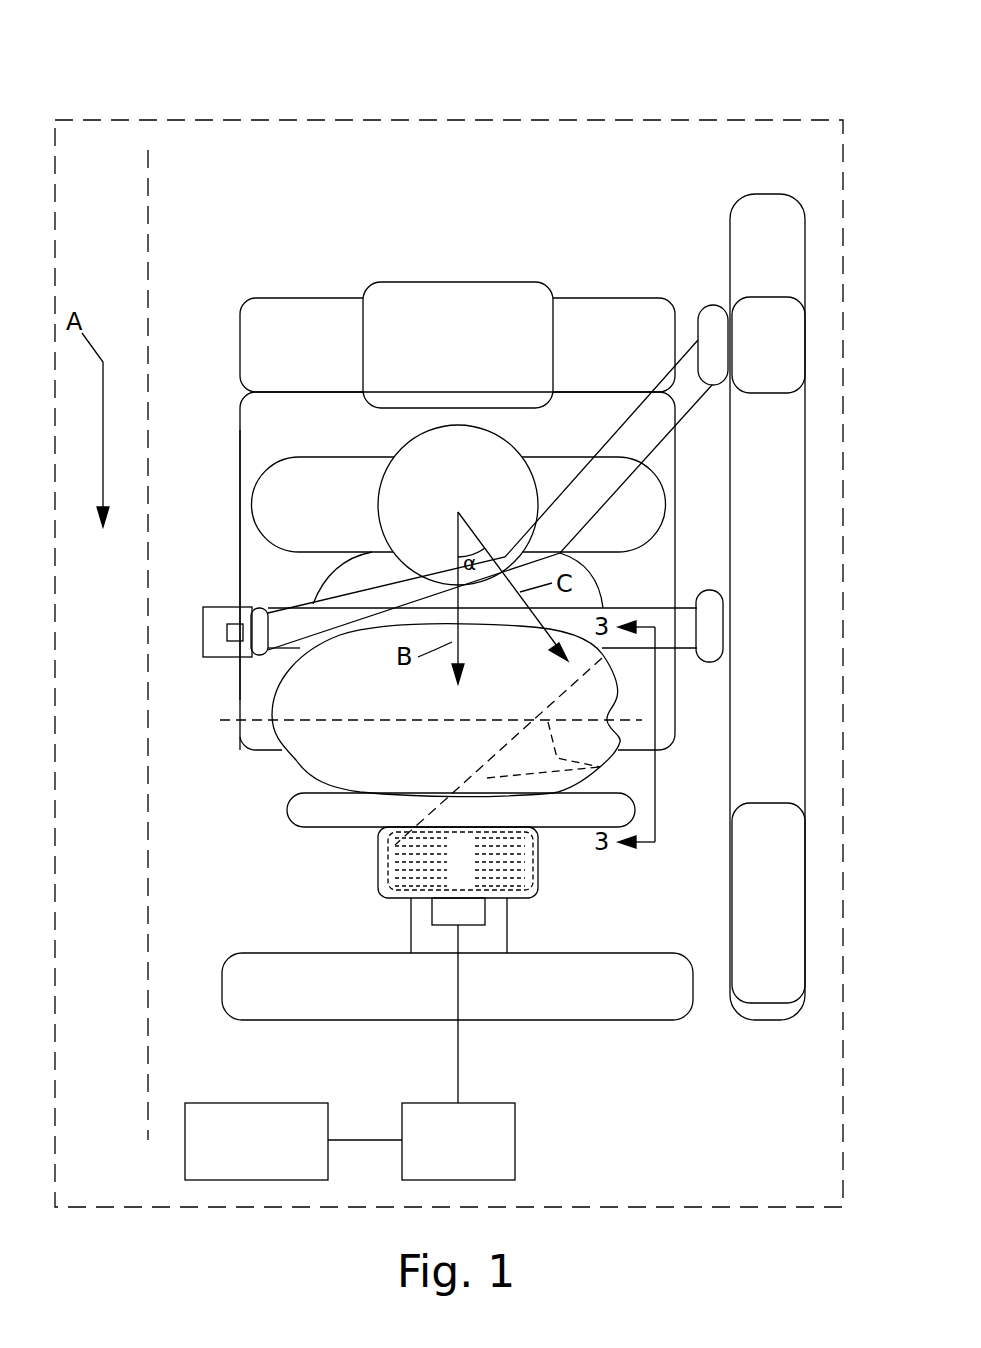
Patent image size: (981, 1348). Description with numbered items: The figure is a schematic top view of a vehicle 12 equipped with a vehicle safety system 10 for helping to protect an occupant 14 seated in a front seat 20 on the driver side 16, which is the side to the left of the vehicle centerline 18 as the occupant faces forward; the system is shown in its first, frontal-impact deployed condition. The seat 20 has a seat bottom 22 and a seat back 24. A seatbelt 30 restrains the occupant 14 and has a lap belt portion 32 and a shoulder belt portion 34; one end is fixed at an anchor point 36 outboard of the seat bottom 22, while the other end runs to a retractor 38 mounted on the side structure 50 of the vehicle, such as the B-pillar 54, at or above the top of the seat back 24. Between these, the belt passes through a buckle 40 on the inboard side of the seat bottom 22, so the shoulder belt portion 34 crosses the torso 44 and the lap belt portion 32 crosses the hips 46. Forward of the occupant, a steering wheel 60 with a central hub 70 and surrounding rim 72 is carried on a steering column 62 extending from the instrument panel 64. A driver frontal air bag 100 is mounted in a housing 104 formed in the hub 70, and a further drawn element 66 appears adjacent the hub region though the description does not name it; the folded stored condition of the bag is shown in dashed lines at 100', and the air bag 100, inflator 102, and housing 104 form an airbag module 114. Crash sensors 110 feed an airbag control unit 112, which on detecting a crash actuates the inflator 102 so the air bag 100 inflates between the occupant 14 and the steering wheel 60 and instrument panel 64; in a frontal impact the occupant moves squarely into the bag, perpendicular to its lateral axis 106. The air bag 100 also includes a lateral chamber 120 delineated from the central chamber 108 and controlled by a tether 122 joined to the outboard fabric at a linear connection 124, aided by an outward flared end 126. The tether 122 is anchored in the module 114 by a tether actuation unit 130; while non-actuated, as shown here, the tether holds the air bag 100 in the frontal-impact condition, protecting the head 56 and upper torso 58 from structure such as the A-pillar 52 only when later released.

The vehicle safety system 10 is at (648, 1050).
The vehicle 12 is at (214, 100).
The occupant 14 is at (343, 500).
The driver side 16 is at (632, 140).
The vehicle centerline 18 is at (148, 228).
The front seat 20 is at (320, 330).
The seat bottom 22 is at (258, 585).
The seat back 24 is at (625, 310).
The seatbelt 30 is at (640, 428).
The lap belt portion 32 is at (672, 610).
The shoulder belt portion 34 is at (590, 500).
The anchor point 36 is at (710, 625).
The retractor 38 is at (718, 330).
The buckle 40 is at (208, 630).
The torso 44 is at (287, 525).
The hip 46 is at (350, 580).
The side structure 50 is at (780, 265).
The A-pillar 52 is at (780, 855).
The B-pillar 54 is at (770, 350).
The head 56 is at (440, 495).
The upper torso 58 is at (290, 503).
The steering wheel 60 is at (330, 805).
The steering column 62 is at (427, 943).
The instrument panel 64 is at (272, 980).
The airbag housing 66 is at (385, 888).
The central hub 70 is at (380, 897).
The rim 72 is at (297, 812).
The driver frontal air bag 100 is at (399, 710).
The stored condition of air bag 100' is at (508, 877).
The inflator 102 is at (468, 907).
The housing 104 is at (513, 900).
The lateral axis 106 is at (415, 725).
The central chamber 108 is at (303, 753).
The crash sensors 110 is at (258, 1108).
The airbag control unit 112 is at (507, 1118).
The airbag module 114 is at (562, 881).
The lateral chamber 120 is at (563, 692).
The tether 122 is at (490, 777).
The connection 124 is at (557, 748).
The outward flared end 126 is at (530, 730).
The tether actuation unit 130 is at (370, 826).